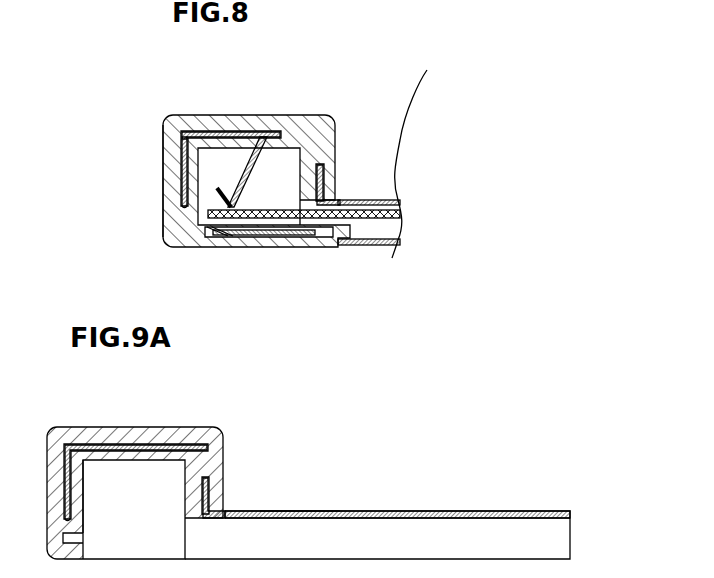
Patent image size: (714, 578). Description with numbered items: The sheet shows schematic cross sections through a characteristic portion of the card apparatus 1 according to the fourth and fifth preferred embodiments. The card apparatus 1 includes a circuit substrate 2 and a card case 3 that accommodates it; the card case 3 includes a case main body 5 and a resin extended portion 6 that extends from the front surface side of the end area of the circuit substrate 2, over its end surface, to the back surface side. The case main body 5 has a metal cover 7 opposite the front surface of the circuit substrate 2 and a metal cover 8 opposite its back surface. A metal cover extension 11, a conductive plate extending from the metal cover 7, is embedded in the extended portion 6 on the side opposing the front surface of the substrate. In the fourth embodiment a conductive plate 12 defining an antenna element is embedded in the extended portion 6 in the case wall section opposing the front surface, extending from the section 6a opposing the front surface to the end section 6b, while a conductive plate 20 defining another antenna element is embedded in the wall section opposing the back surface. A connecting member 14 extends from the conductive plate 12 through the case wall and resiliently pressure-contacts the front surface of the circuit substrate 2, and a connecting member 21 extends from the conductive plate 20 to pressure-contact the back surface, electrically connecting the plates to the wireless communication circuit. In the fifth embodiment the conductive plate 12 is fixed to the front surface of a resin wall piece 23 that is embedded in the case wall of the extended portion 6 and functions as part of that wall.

In FIG. 8, the card apparatus 1 is at (447, 149).
In FIG. 8, the circuit substrate 2 is at (392, 217).
In FIG. 9A, the card case 3 is at (420, 507).
In FIG. 8, the case main body 5 is at (340, 87).
In FIG. 9A, the case main body 5 is at (297, 511).
In FIG. 8, the extended portion 6 is at (158, 87).
In FIG. 9A, the extended portion 6 is at (135, 427).
In FIG. 8, the section opposing the front surface of the circuit substrate 6a is at (229, 132).
In FIG. 8, the end section of the extended portion 6b is at (172, 207).
In FIG. 8, the metal cover 7 is at (375, 199).
In FIG. 9A, the metal cover 7 is at (358, 511).
In FIG. 8, the metal cover 8 is at (368, 247).
In FIG. 8, the metal cover extension 11 is at (325, 176).
In FIG. 9A, the metal cover extension 11 is at (203, 496).
In FIG. 8, the conductive plate 12 is at (182, 165).
In FIG. 9A, the conductive plate 12 is at (80, 447).
In FIG. 8, the connecting member 14 is at (250, 178).
In FIG. 8, the conductive plate 20 is at (255, 236).
In FIG. 8, the connecting member 21 is at (212, 233).
In FIG. 9A, the wall piece 23 is at (78, 505).